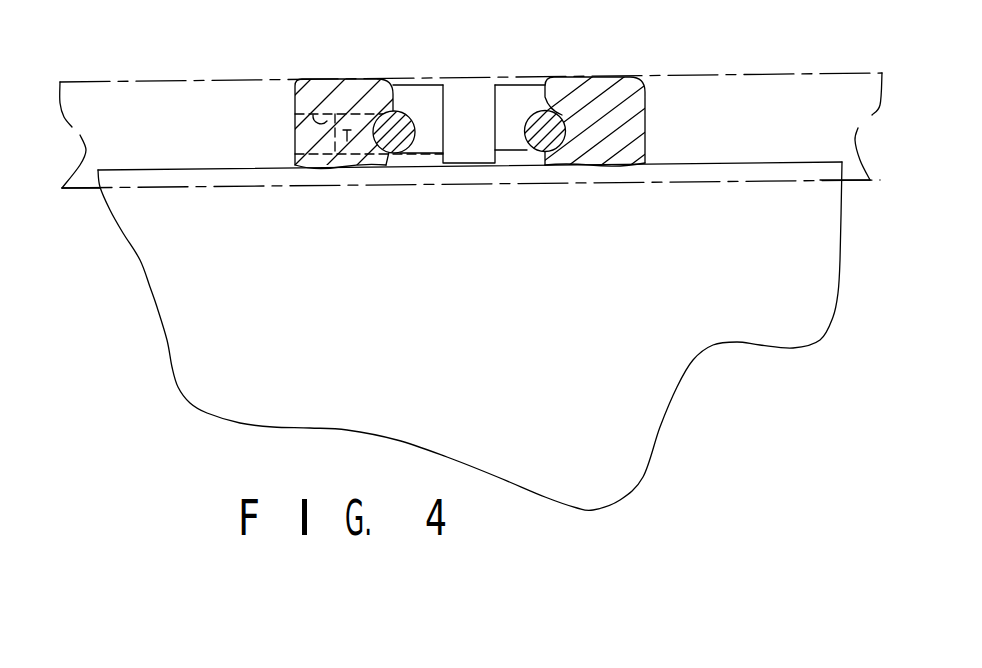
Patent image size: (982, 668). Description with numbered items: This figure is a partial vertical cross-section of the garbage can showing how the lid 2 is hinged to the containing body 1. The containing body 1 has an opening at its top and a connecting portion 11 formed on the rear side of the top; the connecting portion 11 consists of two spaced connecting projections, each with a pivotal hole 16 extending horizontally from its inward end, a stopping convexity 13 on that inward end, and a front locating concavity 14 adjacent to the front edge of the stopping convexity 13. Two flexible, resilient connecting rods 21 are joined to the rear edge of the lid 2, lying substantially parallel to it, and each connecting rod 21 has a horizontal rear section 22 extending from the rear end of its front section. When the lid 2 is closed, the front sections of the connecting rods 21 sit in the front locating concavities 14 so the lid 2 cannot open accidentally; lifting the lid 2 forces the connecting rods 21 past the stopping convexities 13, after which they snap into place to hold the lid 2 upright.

The containing body 1 is at (743, 328).
The lid 2 is at (733, 95).
The connecting portion 11 is at (302, 86).
The stopping convexity 13 is at (397, 82).
The front locating concavity 14 is at (386, 158).
The pivotal hole 16 is at (338, 84).
The connecting rod 21 is at (402, 153).
The horizontal rear section 22 is at (350, 140).